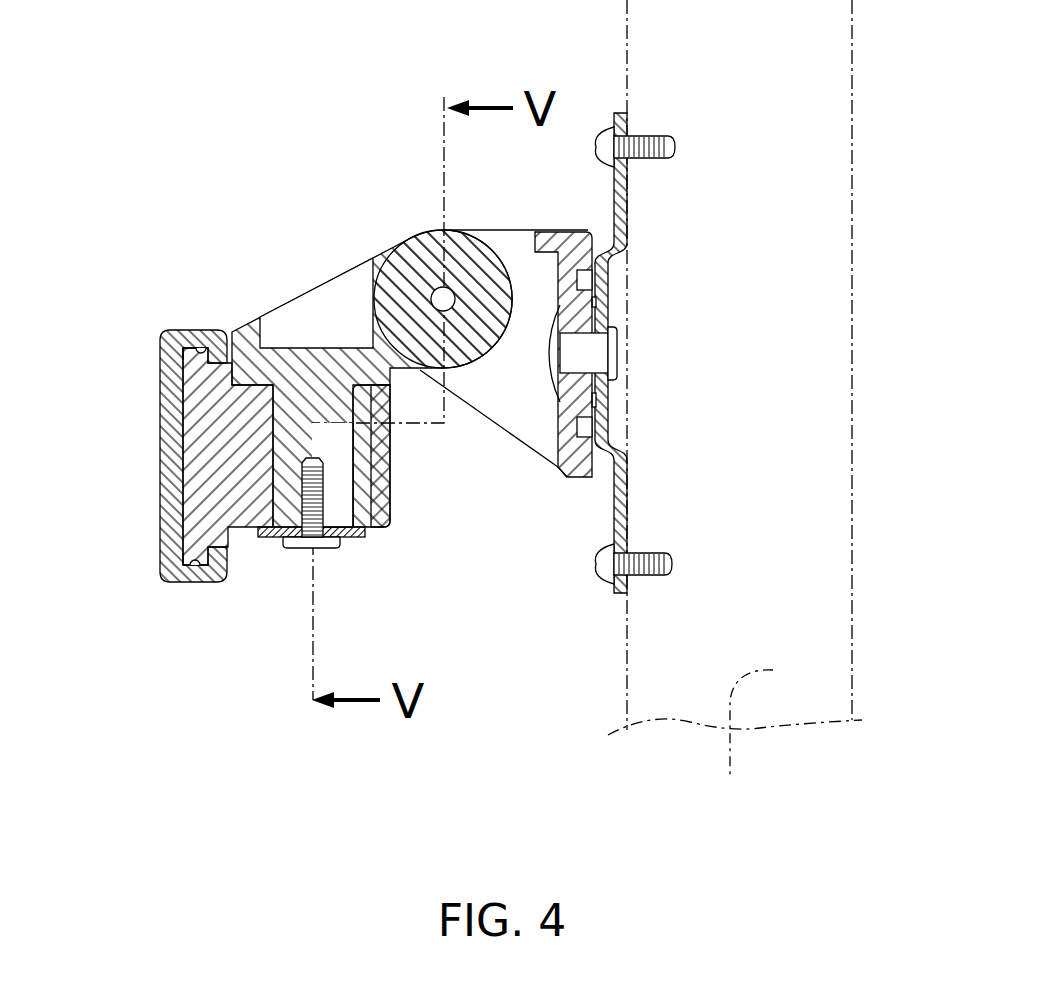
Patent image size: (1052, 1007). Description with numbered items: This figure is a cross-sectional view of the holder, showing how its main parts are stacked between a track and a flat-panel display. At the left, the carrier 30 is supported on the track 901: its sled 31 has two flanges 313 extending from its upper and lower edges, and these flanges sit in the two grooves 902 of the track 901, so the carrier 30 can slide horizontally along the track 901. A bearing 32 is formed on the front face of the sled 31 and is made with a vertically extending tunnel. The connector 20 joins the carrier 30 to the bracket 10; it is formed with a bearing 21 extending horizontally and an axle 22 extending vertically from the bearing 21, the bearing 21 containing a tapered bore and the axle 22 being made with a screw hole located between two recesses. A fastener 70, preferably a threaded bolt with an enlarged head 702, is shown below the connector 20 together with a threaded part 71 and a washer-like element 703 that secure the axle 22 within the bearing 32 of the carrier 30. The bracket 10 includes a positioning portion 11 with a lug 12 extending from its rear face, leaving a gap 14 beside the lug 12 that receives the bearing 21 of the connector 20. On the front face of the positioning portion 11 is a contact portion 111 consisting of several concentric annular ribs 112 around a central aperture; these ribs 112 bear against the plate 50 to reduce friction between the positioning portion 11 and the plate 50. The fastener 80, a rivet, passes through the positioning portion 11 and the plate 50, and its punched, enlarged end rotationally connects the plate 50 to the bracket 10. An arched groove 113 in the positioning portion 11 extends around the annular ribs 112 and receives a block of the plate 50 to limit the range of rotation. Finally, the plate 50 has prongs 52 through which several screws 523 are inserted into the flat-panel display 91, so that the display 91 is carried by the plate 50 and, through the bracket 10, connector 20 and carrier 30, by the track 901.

The bracket 10 is at (509, 343).
The positioning portion 11 is at (570, 232).
The lug 12 is at (531, 408).
The gap 14 is at (510, 366).
The connector 20 is at (308, 348).
The bearing 21 is at (412, 256).
The axle 22 is at (298, 414).
The carrier 30 is at (248, 465).
The sled 31 is at (197, 495).
The bearing 32 is at (380, 440).
The plate 50 is at (653, 302).
The prong 52 is at (618, 193).
The fastener 70 is at (350, 536).
The screw 71 is at (320, 507).
The fastener 80 is at (622, 352).
The flat-panel display 91 is at (735, 402).
The contact portion 111 is at (597, 300).
The annular rib 112 is at (596, 402).
The arched groove 113 is at (586, 478).
The flange 313 is at (185, 350).
The screw 523 is at (652, 135).
The enlarged head 702 is at (347, 540).
The washer 703 is at (282, 538).
The track 901 is at (157, 330).
The groove 902 is at (203, 343).